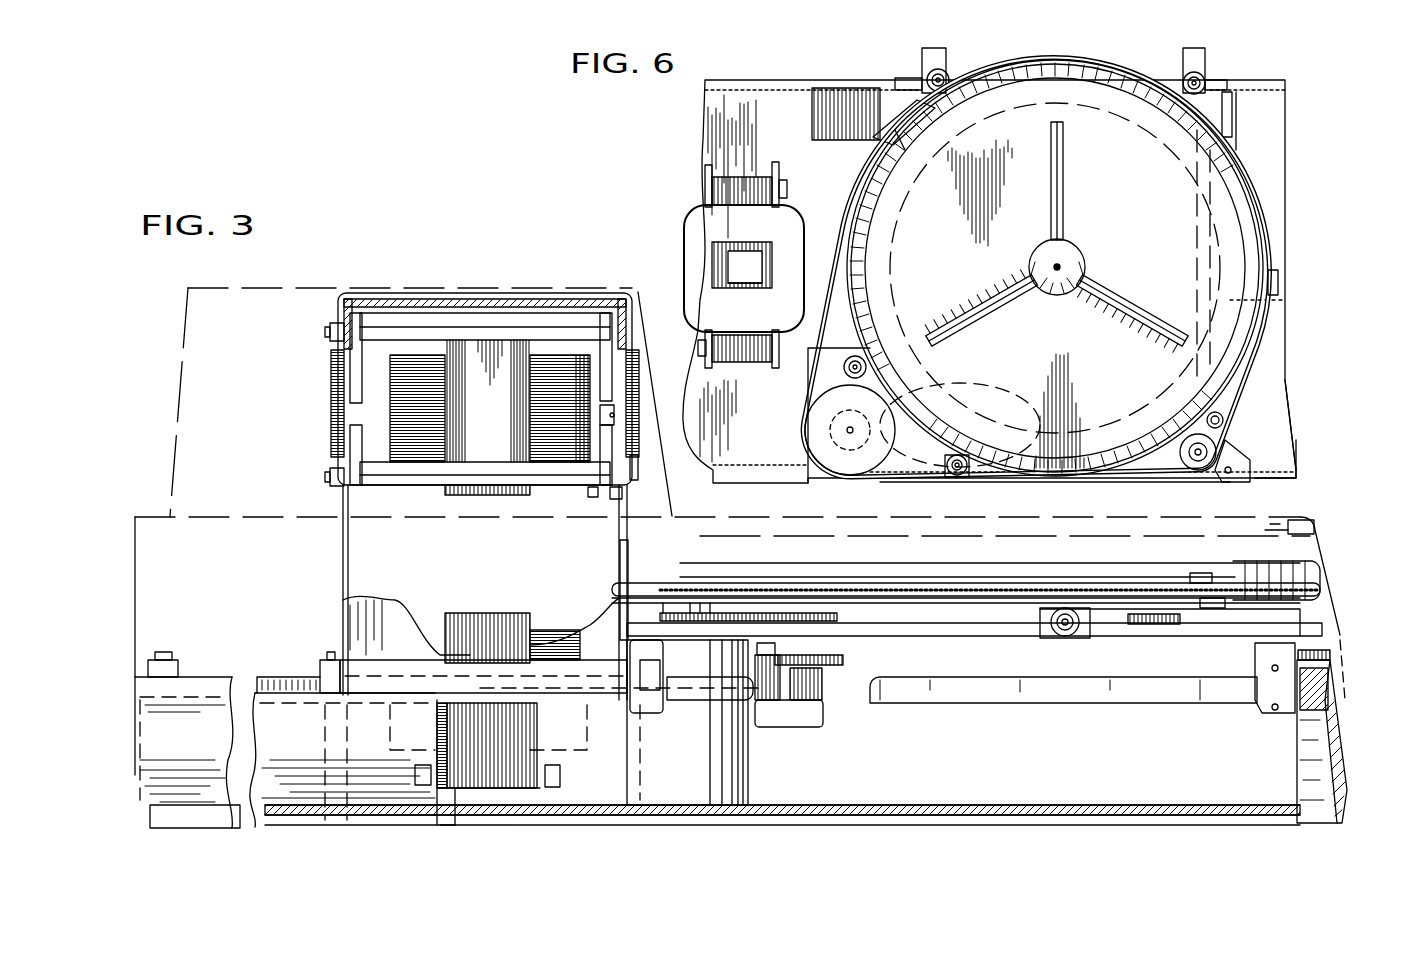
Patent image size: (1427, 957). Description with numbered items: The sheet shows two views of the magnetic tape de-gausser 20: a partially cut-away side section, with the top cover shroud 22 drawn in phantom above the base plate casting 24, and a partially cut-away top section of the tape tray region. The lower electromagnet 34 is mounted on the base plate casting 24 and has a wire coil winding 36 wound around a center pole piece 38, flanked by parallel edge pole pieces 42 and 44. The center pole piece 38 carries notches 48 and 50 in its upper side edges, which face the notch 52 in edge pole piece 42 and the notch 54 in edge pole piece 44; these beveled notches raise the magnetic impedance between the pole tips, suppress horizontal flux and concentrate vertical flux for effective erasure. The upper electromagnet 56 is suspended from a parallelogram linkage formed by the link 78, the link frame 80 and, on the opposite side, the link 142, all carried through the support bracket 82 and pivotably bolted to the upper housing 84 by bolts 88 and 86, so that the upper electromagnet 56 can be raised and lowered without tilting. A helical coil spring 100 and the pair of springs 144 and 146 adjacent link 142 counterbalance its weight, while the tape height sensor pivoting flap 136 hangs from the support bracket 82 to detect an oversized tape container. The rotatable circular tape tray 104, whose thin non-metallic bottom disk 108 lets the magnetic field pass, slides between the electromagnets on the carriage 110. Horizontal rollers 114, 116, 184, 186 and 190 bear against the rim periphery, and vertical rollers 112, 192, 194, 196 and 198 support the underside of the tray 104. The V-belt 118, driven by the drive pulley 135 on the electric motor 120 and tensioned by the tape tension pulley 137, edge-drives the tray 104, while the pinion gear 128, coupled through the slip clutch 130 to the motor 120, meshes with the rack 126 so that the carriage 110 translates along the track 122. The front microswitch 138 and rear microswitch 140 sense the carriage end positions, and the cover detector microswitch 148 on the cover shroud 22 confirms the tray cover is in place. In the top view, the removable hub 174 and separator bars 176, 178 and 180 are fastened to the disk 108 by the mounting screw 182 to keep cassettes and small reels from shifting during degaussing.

In FIG. 3, the magnetic tape de-gausser 20 is at (1366, 620).
In FIG. 3, the top cover shroud 22 is at (1380, 555).
In FIG. 3, the base plate casting 24 is at (1340, 778).
In FIG. 6, the lower electromagnet 34 is at (681, 187).
In FIG. 3, the lower electromagnet 34 is at (488, 612).
In FIG. 6, the wire coil winding 36 is at (688, 228).
In FIG. 6, the center pole piece 38 is at (716, 262).
In FIG. 6, the edge pole piece 42 is at (740, 177).
In FIG. 6, the edge pole piece 44 is at (748, 362).
In FIG. 6, the notch 48 is at (745, 241).
In FIG. 6, the notch 50 is at (750, 290).
In FIG. 6, the notch 52 is at (767, 200).
In FIG. 6, the notch 54 is at (705, 338).
In FIG. 3, the upper electromagnet 56 is at (478, 490).
In FIG. 3, the link 78 is at (618, 492).
In FIG. 3, the link frame 80 is at (350, 358).
In FIG. 3, the support bracket 82 is at (588, 492).
In FIG. 3, the upper housing 84 is at (387, 292).
In FIG. 3, the bolt 86 is at (330, 332).
In FIG. 3, the bolt 88 is at (330, 478).
In FIG. 3, the helical coil spring 100 is at (640, 440).
In FIG. 6, the rotatable circular tape tray 104 is at (1262, 200).
In FIG. 3, the rotatable circular tape tray 104 is at (692, 575).
In FIG. 6, the bottom disk 108 is at (1143, 185).
In FIG. 6, the carriage 110 is at (1228, 115).
In FIG. 3, the carriage 110 is at (1210, 640).
In FIG. 6, the vertical roller 112 is at (905, 130).
In FIG. 6, the horizontal roller 114 is at (960, 475).
In FIG. 6, the horizontal roller 116 is at (945, 70).
In FIG. 6, the V-belt 118 is at (1253, 365).
In FIG. 3, the V-belt 118 is at (612, 590).
In FIG. 3, the electric motor 120 is at (748, 792).
In FIG. 6, the track 122 is at (1288, 88).
In FIG. 6, the rack 126 is at (1298, 472).
In FIG. 3, the rack 126 is at (1078, 700).
In FIG. 3, the pinion gear 128 is at (823, 690).
In FIG. 3, the slip clutch 130 is at (845, 659).
In FIG. 6, the drive pulley 135 is at (820, 433).
In FIG. 3, the drive pulley 135 is at (620, 585).
In FIG. 3, the tape height sensor pivoting flap 136 is at (632, 494).
In FIG. 6, the tape tension pulley 137 is at (1215, 448).
In FIG. 3, the tape tension pulley 137 is at (1205, 580).
In FIG. 3, the front microswitch 138 is at (1332, 655).
In FIG. 3, the rear microswitch 140 is at (162, 658).
In FIG. 3, the link 142 is at (358, 490).
In FIG. 3, the spring 144 is at (332, 380).
In FIG. 3, the spring 146 is at (332, 402).
In FIG. 3, the cover detector microswitch 148 is at (1298, 525).
In FIG. 6, the removable hub 174 is at (1033, 258).
In FIG. 6, the separator bar 176 is at (983, 315).
In FIG. 6, the separator bar 178 is at (1145, 325).
In FIG. 6, the separator bar 180 is at (1052, 157).
In FIG. 6, the mounting screw 182 is at (1062, 265).
In FIG. 6, the horizontal roller 184 is at (862, 358).
In FIG. 6, the horizontal roller 186 is at (1202, 76).
In FIG. 6, the horizontal roller 190 is at (1225, 418).
In FIG. 6, the vertical roller 192 is at (895, 380).
In FIG. 6, the vertical roller 194 is at (1145, 82).
In FIG. 6, the vertical roller 196 is at (1275, 283).
In FIG. 6, the vertical roller 198 is at (1105, 480).